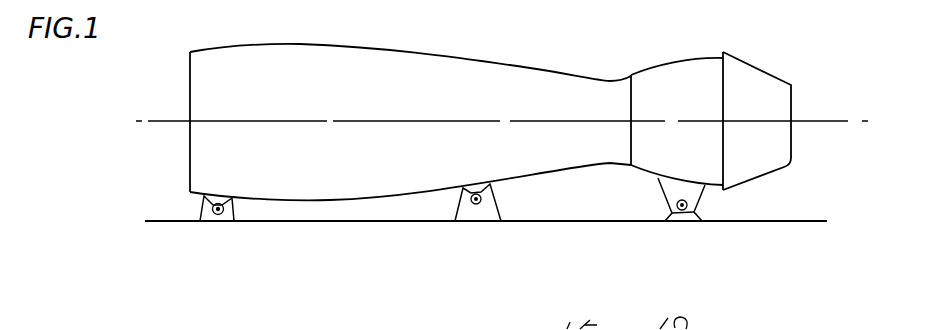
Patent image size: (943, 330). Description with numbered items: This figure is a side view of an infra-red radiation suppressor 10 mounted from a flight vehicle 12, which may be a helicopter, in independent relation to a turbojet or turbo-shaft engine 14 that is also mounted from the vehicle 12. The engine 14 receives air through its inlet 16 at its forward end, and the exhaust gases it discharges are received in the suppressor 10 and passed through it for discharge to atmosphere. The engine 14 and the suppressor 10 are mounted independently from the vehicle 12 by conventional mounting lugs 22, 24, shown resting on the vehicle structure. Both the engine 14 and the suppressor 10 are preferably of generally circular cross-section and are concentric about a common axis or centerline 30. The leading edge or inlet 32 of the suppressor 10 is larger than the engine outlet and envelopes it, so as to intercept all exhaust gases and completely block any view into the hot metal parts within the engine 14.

The infra-red radiation suppressor 10 is at (742, 50).
The flight vehicle 12 is at (486, 244).
The turbo-shaft or turbojet engine 14 is at (440, 44).
The inlet 16 is at (189, 65).
The mounting lug 22 is at (227, 211).
The mounting lug 24 is at (663, 195).
The axis or centerline 30 is at (826, 120).
The inlet of suppressor 32 is at (628, 74).